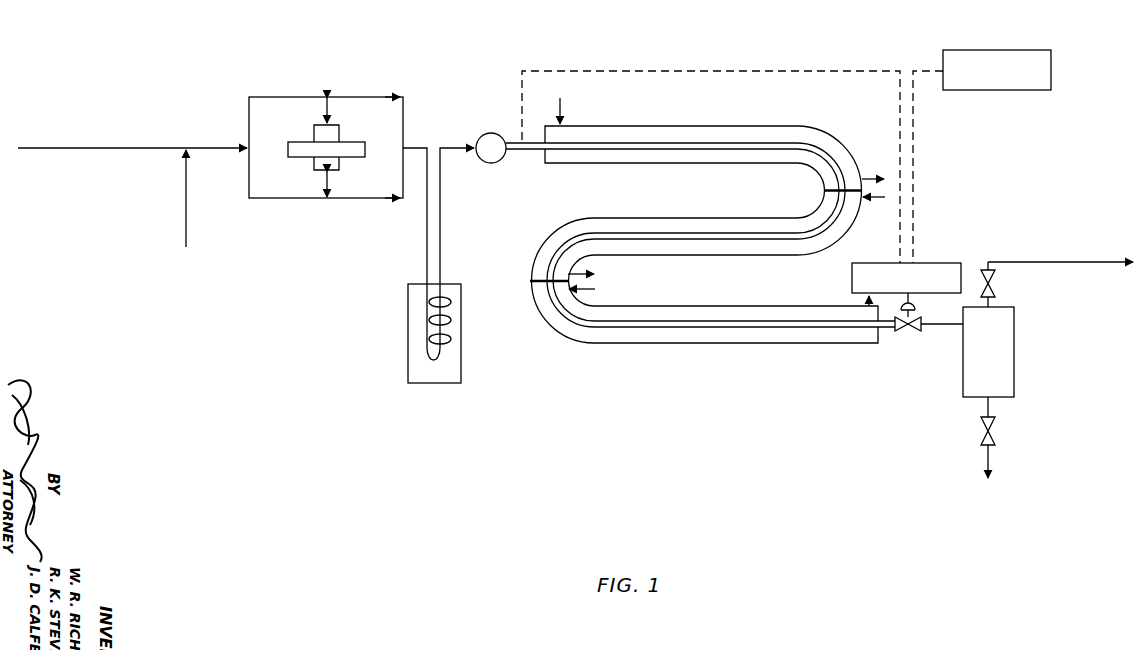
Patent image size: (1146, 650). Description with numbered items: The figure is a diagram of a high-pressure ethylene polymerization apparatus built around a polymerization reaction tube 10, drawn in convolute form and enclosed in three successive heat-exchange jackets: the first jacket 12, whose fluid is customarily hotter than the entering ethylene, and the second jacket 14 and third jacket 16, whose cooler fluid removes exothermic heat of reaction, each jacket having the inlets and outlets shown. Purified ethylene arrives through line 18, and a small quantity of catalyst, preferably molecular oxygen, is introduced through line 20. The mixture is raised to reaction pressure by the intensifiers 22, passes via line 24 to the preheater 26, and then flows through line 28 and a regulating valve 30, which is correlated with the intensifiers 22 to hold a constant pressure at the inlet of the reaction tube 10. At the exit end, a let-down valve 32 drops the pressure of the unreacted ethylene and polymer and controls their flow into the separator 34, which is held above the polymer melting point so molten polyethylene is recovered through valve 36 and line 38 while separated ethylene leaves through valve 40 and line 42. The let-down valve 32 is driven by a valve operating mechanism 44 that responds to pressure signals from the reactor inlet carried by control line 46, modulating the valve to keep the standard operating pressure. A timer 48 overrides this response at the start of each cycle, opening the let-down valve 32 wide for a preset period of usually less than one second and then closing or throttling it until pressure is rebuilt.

The polymerization reaction tube 10 is at (538, 149).
The first jacket 12 is at (740, 126).
The second jacket 14 is at (818, 254).
The third jacket 16 is at (668, 306).
The ethylene line 18 is at (110, 150).
The catalyst line 20 is at (186, 216).
The intensifiers 22 is at (351, 141).
The line 24 is at (427, 248).
The preheater 26 is at (461, 350).
The line 28 is at (440, 200).
The regulating valve 30 is at (488, 163).
The let-down valve 32 is at (912, 332).
The separator 34 is at (1038, 357).
The valve 36 is at (984, 430).
The line 38 is at (992, 463).
The valve 40 is at (1000, 278).
The line 42 is at (1127, 264).
The valve operating mechanism 44 is at (942, 245).
The control line 46 is at (775, 70).
The timer 48 is at (980, 90).